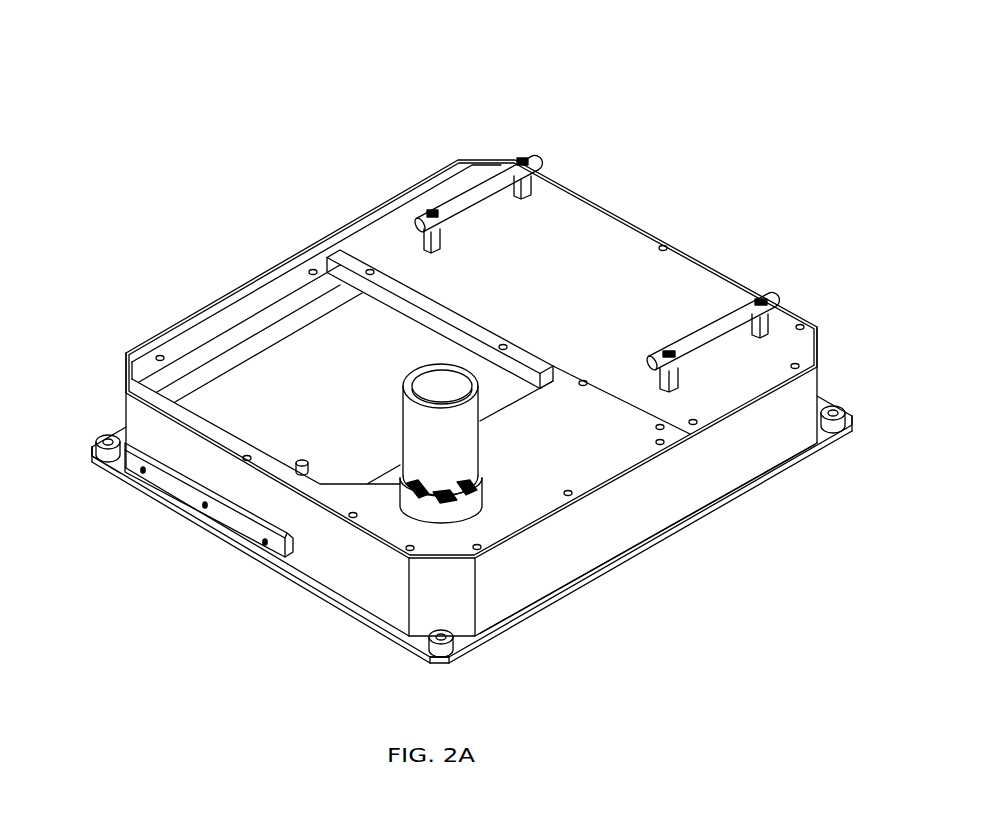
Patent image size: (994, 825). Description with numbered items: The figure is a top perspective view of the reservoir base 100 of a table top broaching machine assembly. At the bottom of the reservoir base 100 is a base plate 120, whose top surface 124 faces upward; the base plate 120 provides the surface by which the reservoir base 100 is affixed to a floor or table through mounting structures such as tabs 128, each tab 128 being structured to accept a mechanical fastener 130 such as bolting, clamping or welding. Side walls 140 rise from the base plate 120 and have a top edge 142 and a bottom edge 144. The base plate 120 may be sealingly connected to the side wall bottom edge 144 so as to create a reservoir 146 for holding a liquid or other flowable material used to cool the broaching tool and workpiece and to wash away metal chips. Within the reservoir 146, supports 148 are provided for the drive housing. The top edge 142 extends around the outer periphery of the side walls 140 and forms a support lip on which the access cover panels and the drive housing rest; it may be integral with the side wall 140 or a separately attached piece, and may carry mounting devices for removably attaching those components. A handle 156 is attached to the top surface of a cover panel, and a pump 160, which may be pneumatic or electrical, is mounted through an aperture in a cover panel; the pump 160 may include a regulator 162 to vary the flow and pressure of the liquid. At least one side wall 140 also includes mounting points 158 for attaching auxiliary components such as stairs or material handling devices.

The reservoir base 100 is at (705, 134).
The base plate 120 is at (747, 490).
The top surface 124 is at (248, 398).
The mounting tab 128 is at (118, 462).
The mechanical fastener 130 is at (106, 438).
The side wall 140 is at (777, 427).
The top edge 142 is at (247, 307).
The bottom edge 144 is at (527, 610).
The reservoir 146 is at (357, 363).
The support 148 is at (430, 307).
The handle 156 is at (478, 183).
The mounting point 158 is at (235, 508).
The pump 160 is at (582, 438).
The regulator 162 is at (425, 438).